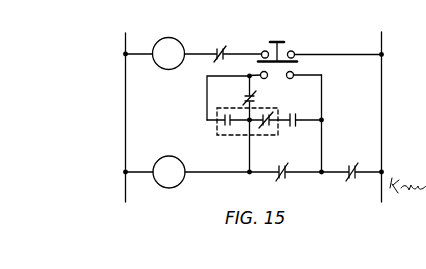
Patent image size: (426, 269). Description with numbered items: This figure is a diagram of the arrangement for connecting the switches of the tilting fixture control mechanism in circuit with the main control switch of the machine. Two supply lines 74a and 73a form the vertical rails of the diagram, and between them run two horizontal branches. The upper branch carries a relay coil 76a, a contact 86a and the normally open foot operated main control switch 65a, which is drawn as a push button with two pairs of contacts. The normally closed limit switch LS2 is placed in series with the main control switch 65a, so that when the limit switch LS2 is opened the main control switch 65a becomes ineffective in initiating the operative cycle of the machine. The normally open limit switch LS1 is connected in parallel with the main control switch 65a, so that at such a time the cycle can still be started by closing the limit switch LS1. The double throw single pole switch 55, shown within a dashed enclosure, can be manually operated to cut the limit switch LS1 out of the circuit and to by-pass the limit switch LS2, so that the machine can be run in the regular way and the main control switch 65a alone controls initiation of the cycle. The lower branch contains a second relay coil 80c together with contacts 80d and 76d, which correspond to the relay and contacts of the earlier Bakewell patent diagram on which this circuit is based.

The supply line 74a is at (126, 87).
The supply line 73a is at (382, 90).
The relay coil 76a is at (169, 54).
The relay contact 86a is at (218, 49).
The foot operated main control switch 65a is at (279, 43).
The normally closed limit switch LS2 is at (246, 97).
The normally open limit switch LS1 is at (300, 108).
The double throw single pole switch 55 is at (229, 135).
The relay coil 80c is at (169, 172).
The relay contact 80d is at (282, 164).
The relay contact 76d is at (352, 164).